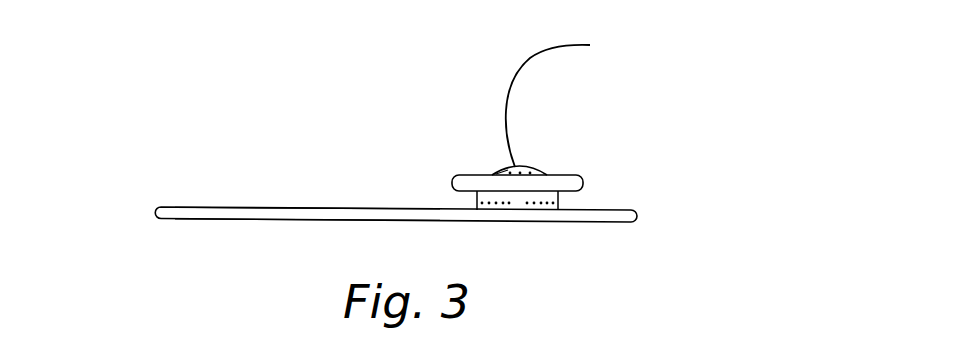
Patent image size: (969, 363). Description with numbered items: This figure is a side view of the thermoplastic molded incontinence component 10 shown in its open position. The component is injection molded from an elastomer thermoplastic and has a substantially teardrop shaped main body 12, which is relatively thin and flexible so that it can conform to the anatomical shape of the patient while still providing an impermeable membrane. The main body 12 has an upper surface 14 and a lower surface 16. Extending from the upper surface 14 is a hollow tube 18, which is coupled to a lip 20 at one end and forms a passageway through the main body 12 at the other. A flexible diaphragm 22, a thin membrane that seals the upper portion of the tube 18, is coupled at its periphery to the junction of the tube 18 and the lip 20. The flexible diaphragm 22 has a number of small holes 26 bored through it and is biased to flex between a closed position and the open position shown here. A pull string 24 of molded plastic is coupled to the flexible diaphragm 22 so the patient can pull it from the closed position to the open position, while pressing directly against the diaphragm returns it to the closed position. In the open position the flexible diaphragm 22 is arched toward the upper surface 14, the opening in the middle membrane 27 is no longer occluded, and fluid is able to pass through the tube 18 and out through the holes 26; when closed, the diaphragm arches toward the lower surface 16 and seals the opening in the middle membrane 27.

The molded incontinence component 10 is at (152, 103).
The main body 12 is at (172, 208).
The upper surface 14 is at (210, 207).
The lower surface 16 is at (274, 217).
The hollow tube 18 is at (558, 197).
The lip 20 is at (578, 175).
The flexible diaphragm 22 is at (530, 167).
The pull string 24 is at (560, 50).
The small holes 26 is at (502, 173).
The middle membrane 27 is at (540, 205).